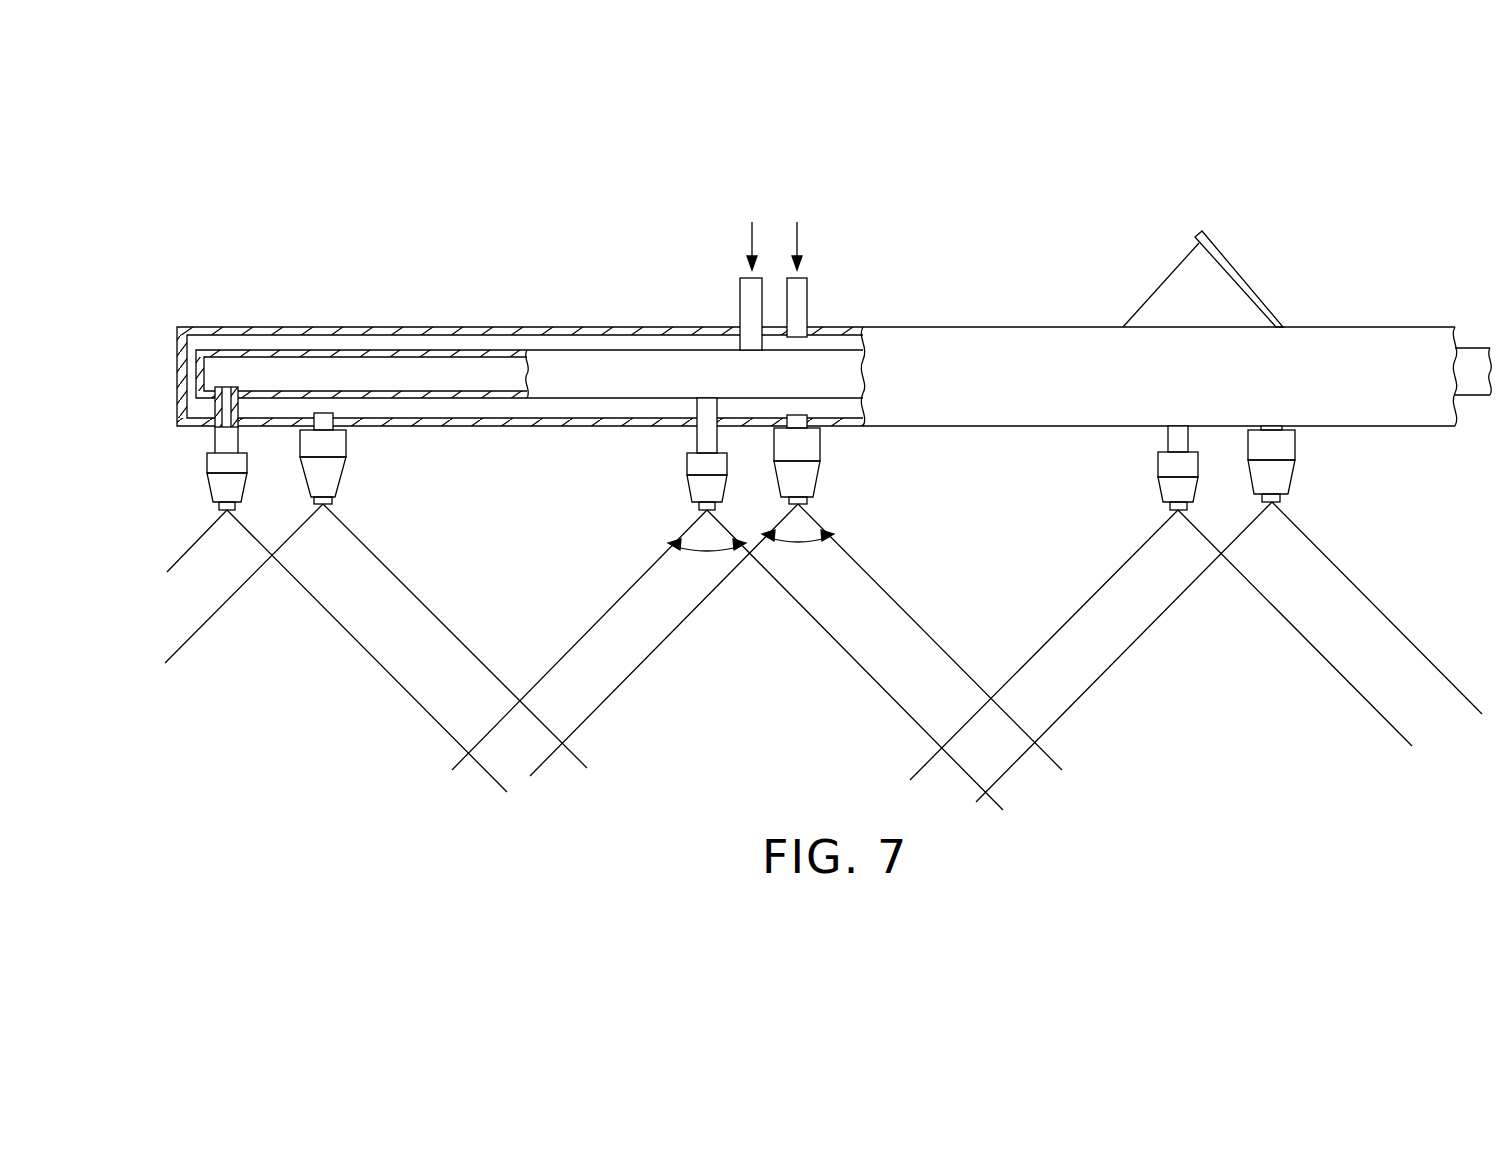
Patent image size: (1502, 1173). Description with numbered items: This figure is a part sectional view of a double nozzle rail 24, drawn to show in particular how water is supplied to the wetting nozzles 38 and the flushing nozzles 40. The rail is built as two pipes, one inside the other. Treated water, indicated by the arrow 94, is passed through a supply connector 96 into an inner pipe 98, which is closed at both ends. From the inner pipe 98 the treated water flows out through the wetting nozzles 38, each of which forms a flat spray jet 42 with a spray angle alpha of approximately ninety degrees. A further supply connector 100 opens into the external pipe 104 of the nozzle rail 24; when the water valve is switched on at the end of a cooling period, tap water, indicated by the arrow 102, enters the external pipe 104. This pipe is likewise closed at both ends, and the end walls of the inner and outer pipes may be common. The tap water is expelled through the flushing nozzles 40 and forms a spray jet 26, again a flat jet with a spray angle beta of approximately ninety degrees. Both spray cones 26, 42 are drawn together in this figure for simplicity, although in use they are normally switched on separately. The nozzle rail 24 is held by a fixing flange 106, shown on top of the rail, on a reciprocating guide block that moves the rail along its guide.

The nozzle rail 24 is at (1400, 347).
The spray jet 26 is at (868, 593).
The wetting nozzles 38 is at (700, 486).
The flushing nozzles 40 is at (810, 472).
The flat spray jet 42 is at (638, 594).
The arrow 94 is at (748, 236).
The supply connector 96 is at (750, 298).
The inner pipe 98 is at (473, 350).
The further supply connector 100 is at (798, 295).
The arrow 102 is at (800, 233).
The external pipe 104 is at (392, 327).
The fixing flange 106 is at (1237, 270).